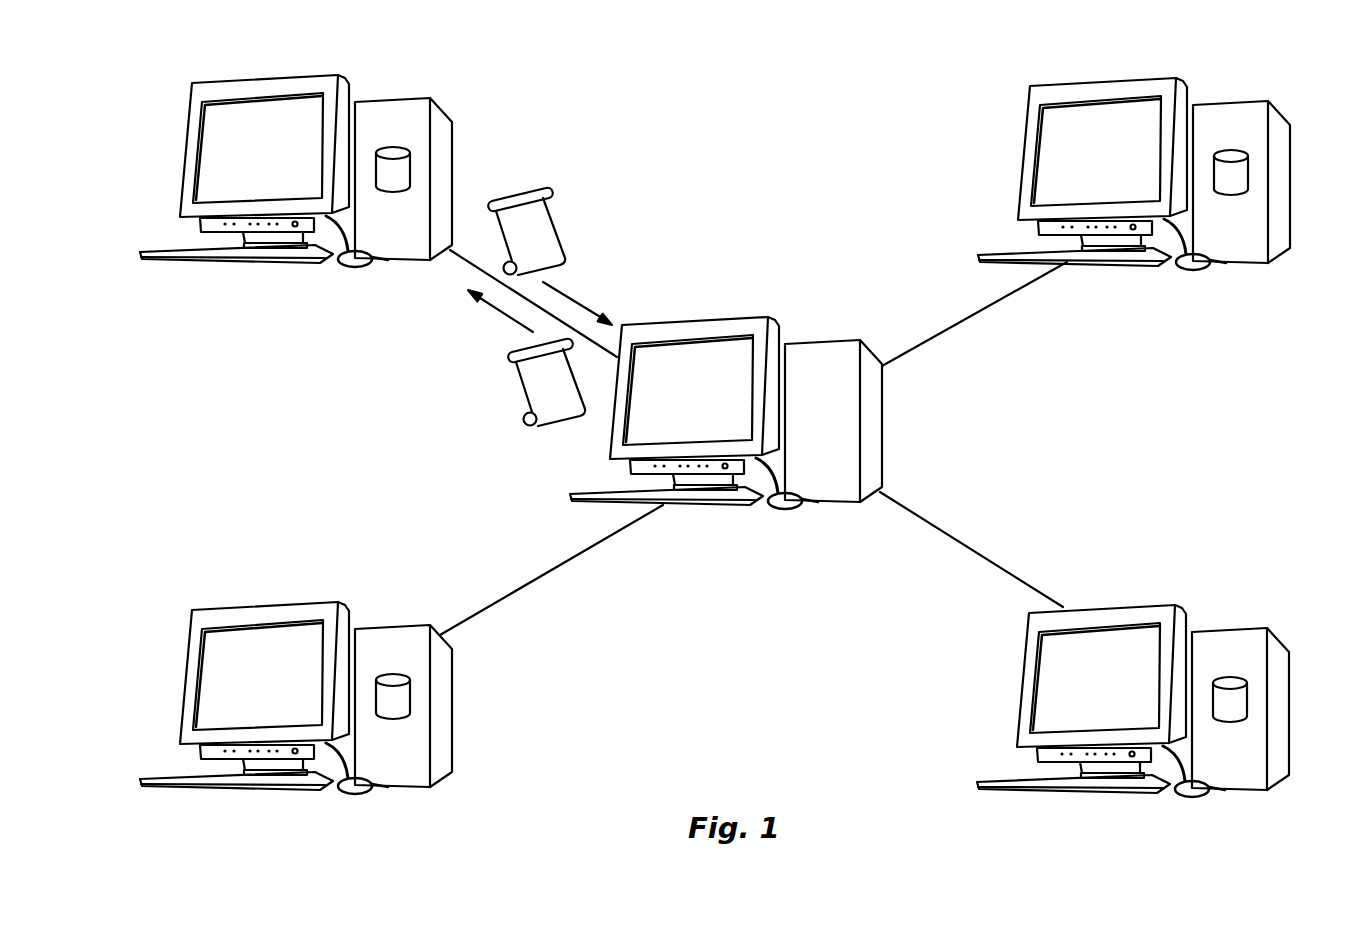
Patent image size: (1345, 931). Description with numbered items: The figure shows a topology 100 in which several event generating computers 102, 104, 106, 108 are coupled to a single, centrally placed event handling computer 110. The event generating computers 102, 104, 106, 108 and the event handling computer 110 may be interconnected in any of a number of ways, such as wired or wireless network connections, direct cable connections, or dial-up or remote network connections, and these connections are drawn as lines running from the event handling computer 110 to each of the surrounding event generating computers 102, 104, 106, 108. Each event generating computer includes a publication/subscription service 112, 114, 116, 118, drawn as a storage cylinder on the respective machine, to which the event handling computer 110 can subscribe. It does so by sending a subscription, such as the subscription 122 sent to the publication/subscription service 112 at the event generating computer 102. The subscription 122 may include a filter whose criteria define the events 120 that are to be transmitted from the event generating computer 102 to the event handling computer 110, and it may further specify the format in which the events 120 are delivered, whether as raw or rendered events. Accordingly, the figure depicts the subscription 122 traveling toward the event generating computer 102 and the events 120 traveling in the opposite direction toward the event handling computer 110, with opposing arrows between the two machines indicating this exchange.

The topology 100 is at (771, 81).
The event generating computer 102 is at (393, 98).
The event generating computer 104 is at (1161, 168).
The event generating computer 106 is at (1160, 695).
The event generating computer 108 is at (323, 692).
The event handling computer 110 is at (728, 407).
The publication/subscription service 112 is at (413, 170).
The publication/subscription service 114 is at (1279, 172).
The publication/subscription service 116 is at (1278, 699).
The publication/subscription service 118 is at (441, 696).
The events 120 is at (521, 190).
The subscription 122 is at (560, 425).